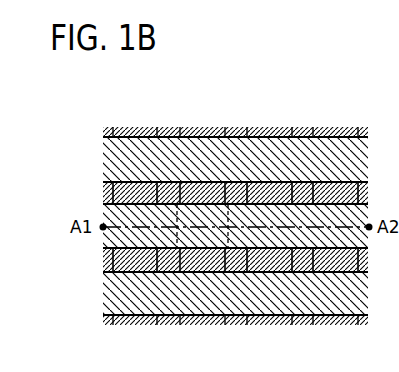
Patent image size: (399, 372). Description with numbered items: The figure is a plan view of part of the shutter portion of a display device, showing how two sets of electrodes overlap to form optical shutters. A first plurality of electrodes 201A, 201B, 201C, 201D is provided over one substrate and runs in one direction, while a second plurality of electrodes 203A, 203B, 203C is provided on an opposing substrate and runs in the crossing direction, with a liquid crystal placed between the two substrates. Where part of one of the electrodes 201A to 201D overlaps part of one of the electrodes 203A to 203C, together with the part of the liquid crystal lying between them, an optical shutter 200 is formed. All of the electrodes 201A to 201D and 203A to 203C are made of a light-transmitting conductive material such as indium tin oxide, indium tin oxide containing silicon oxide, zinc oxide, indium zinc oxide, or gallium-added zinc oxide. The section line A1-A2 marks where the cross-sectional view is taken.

The optical shutter 200 is at (110, 190).
The electrode 201A is at (133, 127).
The electrode 201B is at (205, 127).
The electrode 201C is at (270, 127).
The electrode 201D is at (337, 127).
The electrode 203A is at (110, 156).
The electrode 203B is at (112, 259).
The electrode 203C is at (110, 288).